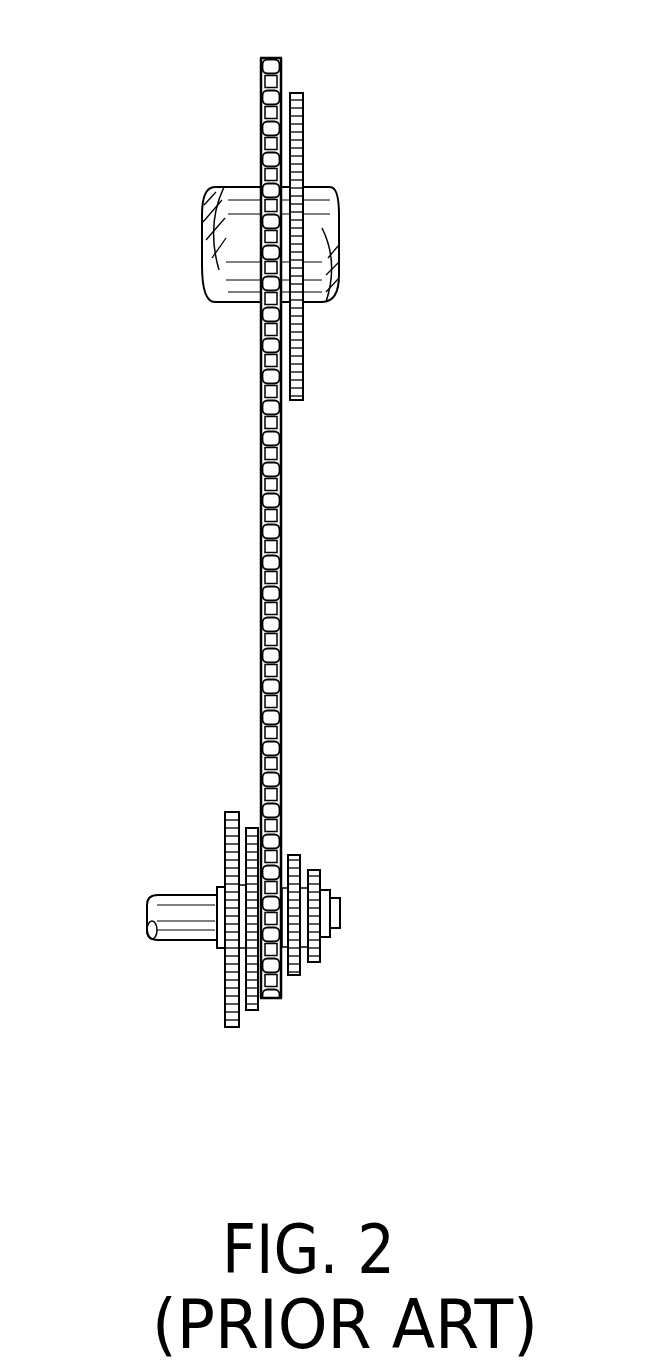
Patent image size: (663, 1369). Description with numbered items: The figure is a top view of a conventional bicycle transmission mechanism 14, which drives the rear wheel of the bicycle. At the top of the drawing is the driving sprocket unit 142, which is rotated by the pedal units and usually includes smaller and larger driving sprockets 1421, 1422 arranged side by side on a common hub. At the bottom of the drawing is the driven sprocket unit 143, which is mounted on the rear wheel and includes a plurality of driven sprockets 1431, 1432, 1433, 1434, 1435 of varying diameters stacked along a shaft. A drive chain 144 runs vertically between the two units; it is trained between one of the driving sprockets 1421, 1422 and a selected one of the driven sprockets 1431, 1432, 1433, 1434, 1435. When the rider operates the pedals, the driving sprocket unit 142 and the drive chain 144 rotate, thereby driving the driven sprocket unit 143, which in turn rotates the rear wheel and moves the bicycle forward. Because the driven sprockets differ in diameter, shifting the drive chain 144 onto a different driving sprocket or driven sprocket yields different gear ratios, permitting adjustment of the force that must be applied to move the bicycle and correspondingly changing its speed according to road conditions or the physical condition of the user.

The transmission mechanism 14 is at (272, 553).
The driving sprocket unit 142 is at (357, 201).
The smaller driving sprocket 1421 is at (283, 76).
The larger driving sprocket 1422 is at (303, 107).
The driven sprocket unit 143 is at (236, 946).
The driven sprocket 1431 is at (320, 958).
The driven sprocket 1432 is at (300, 977).
The driven sprocket 1433 is at (275, 998).
The driven sprocket 1434 is at (252, 1010).
The driven sprocket 1435 is at (225, 825).
The drive chain 144 is at (283, 478).